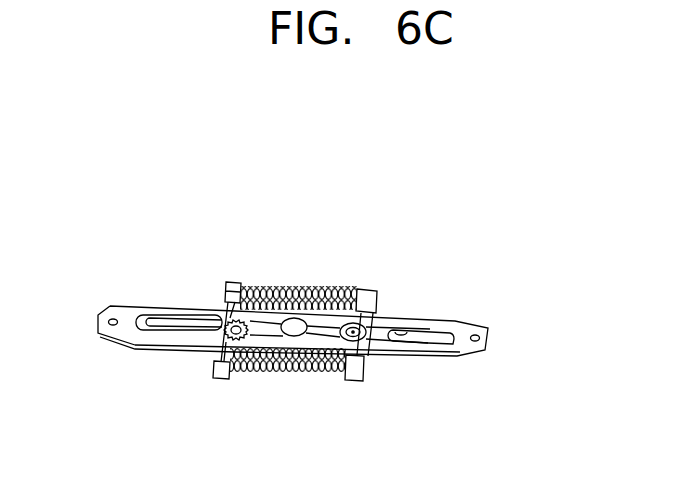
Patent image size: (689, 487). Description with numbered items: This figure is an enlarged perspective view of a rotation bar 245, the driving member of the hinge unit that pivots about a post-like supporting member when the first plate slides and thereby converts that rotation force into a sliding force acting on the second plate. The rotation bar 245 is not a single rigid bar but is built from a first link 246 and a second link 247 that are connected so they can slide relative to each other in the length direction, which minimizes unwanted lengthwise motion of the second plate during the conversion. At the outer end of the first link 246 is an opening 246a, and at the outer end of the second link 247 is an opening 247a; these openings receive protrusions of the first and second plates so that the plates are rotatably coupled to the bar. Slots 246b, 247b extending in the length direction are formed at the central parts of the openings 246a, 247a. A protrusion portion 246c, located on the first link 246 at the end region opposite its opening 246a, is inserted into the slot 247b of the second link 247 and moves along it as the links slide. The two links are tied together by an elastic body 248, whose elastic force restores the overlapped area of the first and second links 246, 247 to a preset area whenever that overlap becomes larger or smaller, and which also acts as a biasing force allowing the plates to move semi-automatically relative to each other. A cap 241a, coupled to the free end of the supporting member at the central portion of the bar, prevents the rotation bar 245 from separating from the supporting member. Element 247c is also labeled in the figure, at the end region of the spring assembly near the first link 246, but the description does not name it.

The rotation bar 245 is at (402, 388).
The first link 246 is at (192, 312).
The opening 246a is at (112, 306).
The slot 246b is at (142, 312).
The protrusion portion 246c is at (366, 290).
The second link 247 is at (450, 320).
The opening 247a is at (485, 330).
The slot 247b is at (415, 328).
The spring end cap 247c is at (228, 283).
The elastic body 248 is at (335, 287).
The cap 241a is at (296, 318).